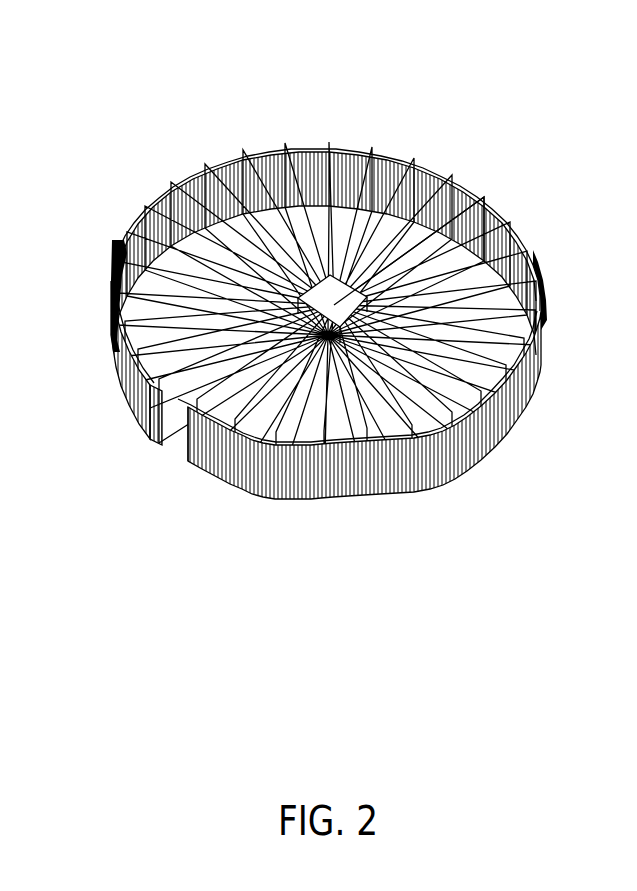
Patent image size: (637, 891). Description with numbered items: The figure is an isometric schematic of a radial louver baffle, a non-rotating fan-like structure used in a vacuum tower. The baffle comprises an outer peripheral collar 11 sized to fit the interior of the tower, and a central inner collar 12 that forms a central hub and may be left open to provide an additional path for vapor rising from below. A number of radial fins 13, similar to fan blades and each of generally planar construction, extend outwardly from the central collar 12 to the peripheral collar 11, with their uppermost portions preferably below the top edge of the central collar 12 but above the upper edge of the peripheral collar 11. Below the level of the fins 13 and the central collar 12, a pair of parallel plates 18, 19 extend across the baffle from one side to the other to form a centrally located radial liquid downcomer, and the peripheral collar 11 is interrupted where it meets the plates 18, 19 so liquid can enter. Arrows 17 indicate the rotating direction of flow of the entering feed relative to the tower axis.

The peripheral collar 11 is at (222, 503).
The central collar 12 is at (316, 316).
The radial fins 13 is at (313, 456).
The arrows 17 is at (230, 70).
The parallel plate 18 is at (152, 462).
The parallel plate 19 is at (492, 220).